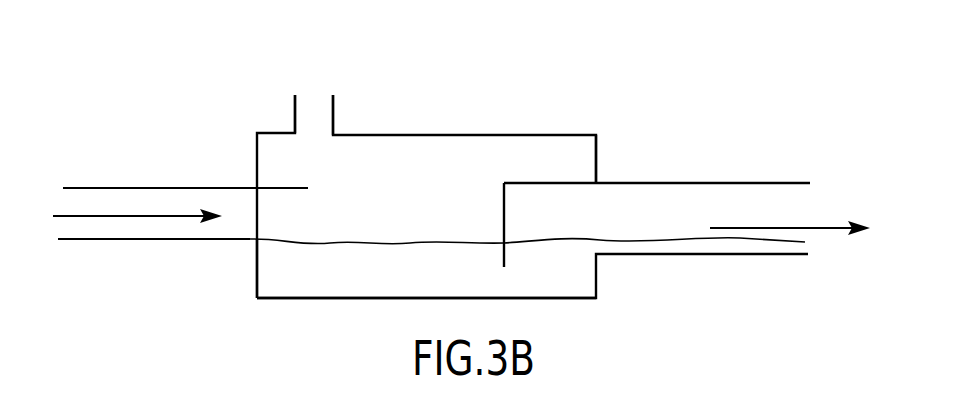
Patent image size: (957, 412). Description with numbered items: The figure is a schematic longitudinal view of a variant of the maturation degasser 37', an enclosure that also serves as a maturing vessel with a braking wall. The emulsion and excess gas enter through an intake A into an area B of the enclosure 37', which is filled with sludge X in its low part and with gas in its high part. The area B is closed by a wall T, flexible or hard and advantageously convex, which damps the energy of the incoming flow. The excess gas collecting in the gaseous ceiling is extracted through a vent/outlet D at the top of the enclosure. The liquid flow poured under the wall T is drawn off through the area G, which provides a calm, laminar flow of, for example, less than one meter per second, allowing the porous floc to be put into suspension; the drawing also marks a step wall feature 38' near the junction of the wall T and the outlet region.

The intake A is at (131, 206).
The area B is at (306, 198).
The vent/outlet D is at (290, 108).
The sludge X is at (342, 268).
The wall T is at (498, 200).
The area G is at (705, 202).
The step wall 38' is at (657, 98).
The maturation degasser 37' is at (639, 140).